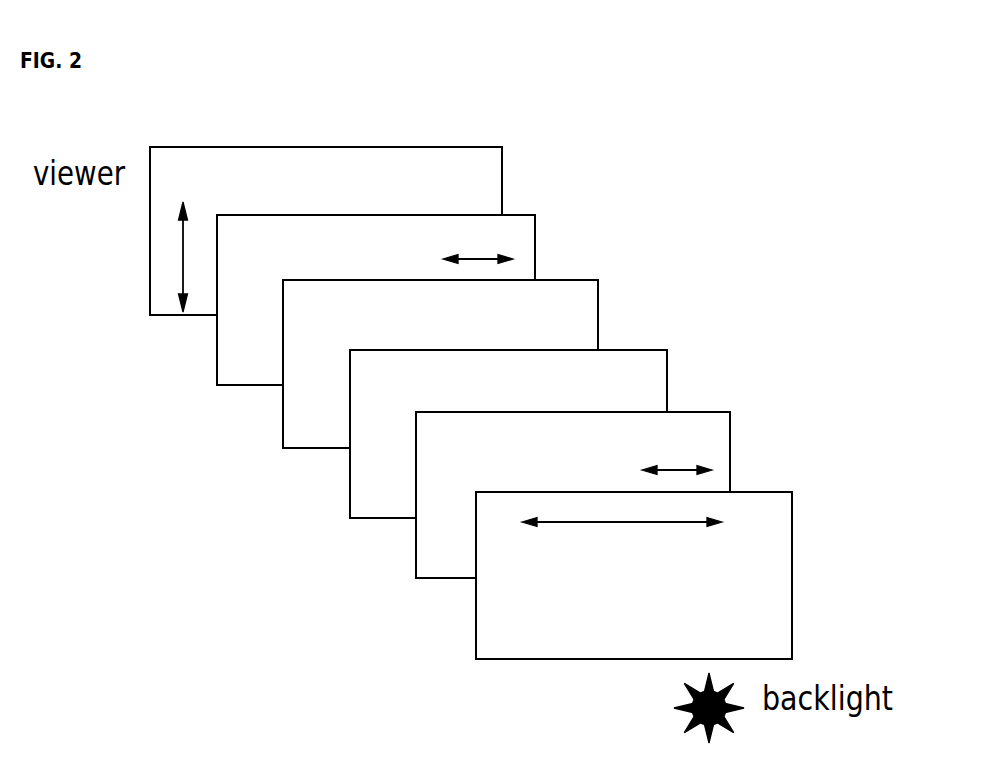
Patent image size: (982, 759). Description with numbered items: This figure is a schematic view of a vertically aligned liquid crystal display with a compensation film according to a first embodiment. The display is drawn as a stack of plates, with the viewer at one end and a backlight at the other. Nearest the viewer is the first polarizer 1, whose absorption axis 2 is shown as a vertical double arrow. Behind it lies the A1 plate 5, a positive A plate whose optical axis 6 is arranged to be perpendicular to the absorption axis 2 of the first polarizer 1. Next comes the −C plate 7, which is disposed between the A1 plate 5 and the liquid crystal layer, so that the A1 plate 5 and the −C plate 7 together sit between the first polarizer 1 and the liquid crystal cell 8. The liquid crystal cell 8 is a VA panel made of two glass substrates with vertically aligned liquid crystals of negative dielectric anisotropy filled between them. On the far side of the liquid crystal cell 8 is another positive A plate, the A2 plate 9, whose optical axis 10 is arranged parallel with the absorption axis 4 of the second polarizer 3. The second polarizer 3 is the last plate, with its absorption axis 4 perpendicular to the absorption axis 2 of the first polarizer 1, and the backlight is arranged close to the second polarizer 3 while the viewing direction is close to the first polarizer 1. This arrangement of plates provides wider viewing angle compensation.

The first polarizer 1 is at (326, 231).
The absorption axis of the first polarizer 2 is at (190, 235).
The second polarizer 3 is at (634, 575).
The absorption axis of the second polarizer 4 is at (647, 525).
The A1 plate 5 is at (376, 300).
The optical axis of the A1 plate 6 is at (478, 240).
The −C plate 7 is at (440, 364).
The liquid crystal cell 8 is at (508, 434).
The A2 plate 9 is at (573, 495).
The optical axis of the A2 plate 10 is at (677, 445).